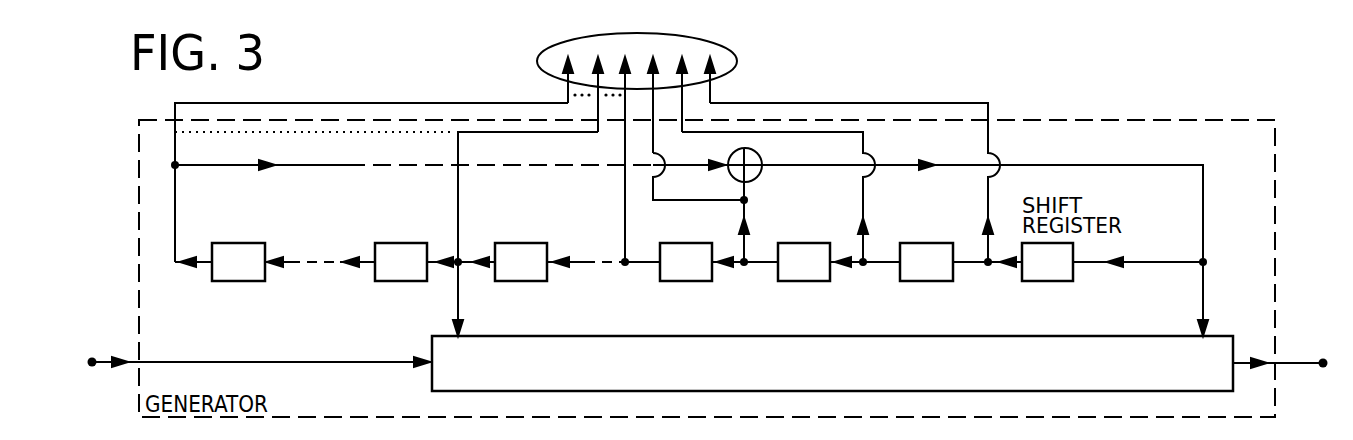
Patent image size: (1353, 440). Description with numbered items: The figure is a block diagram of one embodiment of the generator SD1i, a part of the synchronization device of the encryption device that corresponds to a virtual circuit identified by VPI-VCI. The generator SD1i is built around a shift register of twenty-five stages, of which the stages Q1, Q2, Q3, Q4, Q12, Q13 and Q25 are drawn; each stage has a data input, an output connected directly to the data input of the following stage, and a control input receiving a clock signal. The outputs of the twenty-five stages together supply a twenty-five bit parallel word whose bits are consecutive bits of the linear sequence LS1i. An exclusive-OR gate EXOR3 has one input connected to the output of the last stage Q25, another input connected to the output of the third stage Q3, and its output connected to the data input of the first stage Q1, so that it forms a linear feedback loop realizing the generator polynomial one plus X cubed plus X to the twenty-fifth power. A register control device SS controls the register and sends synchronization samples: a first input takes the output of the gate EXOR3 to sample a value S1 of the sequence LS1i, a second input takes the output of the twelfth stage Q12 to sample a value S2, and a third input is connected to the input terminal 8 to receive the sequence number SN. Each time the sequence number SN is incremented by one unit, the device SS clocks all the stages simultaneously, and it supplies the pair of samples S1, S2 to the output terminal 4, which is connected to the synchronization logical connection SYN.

The twenty-fifth shift register stage Q25 is at (237, 253).
The thirteenth shift register stage Q13 is at (397, 253).
The twelfth shift register stage Q12 is at (515, 252).
The fourth shift register stage Q4 is at (677, 272).
The third shift register stage Q3 is at (800, 268).
The second shift register stage Q2 is at (930, 268).
The first shift register stage Q1 is at (1050, 268).
The exclusive-OR gate EXOR3 is at (755, 172).
The linear sequence LS1i is at (736, 60).
The generator SD1i is at (1108, 137).
The second sample value S2 is at (458, 295).
The first sample value S1 is at (1205, 290).
The register control device SS is at (1155, 355).
The sequence number SN is at (230, 362).
The synchronization logical connection SYN is at (1298, 362).
The input terminal 8 is at (92, 357).
The output terminal 4 is at (1322, 368).